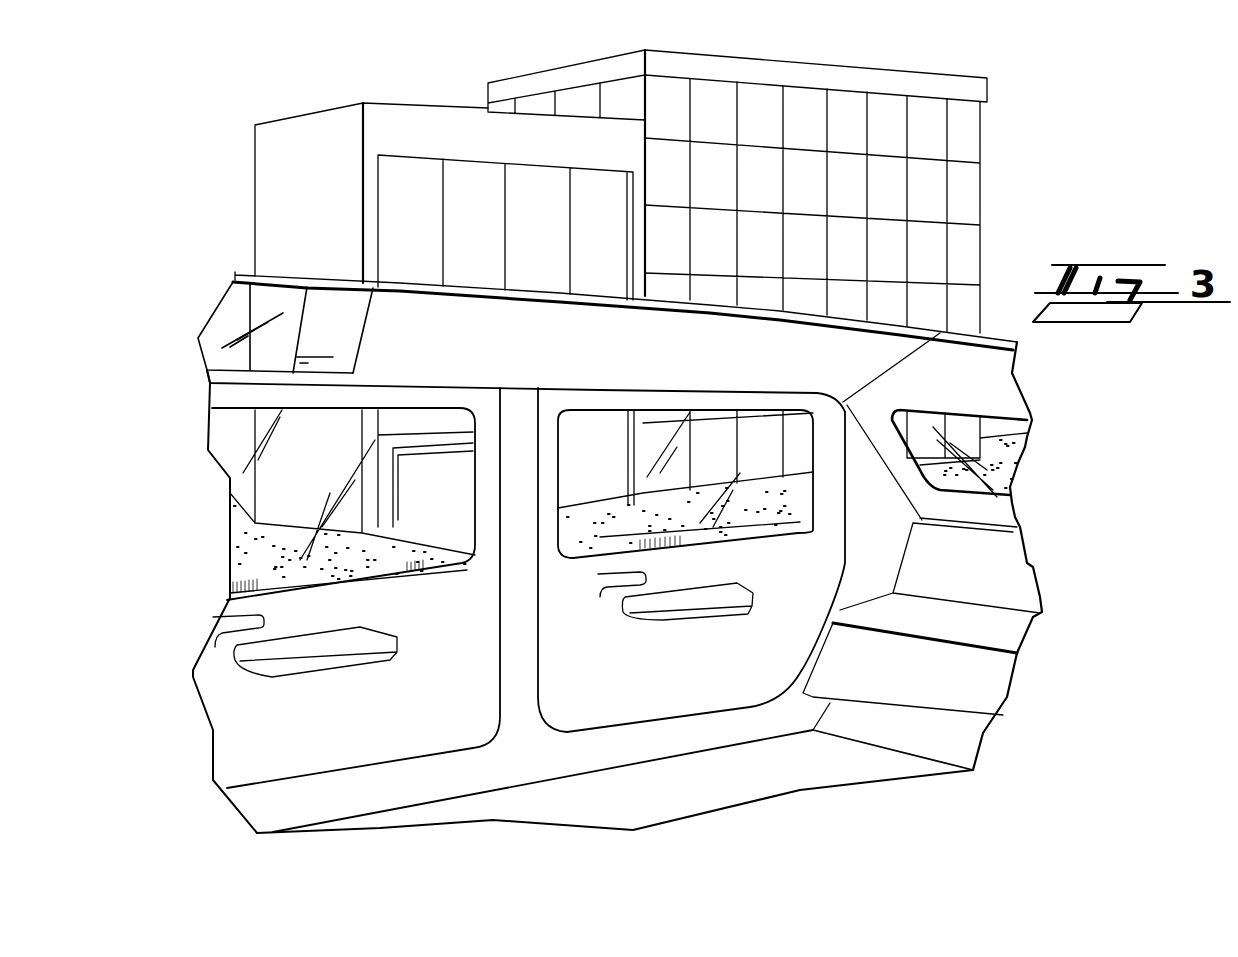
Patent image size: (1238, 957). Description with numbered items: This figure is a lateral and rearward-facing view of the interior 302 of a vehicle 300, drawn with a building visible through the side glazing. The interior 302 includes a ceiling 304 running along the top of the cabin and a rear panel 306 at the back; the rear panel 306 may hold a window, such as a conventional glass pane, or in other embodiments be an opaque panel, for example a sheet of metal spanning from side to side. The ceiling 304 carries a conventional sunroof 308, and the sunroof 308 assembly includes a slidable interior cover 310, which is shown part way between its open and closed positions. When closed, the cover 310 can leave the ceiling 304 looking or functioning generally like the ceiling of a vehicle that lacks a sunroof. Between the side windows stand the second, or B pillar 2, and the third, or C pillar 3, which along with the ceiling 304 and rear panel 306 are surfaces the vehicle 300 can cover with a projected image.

The vehicle 300 is at (640, 809).
The interior 302 is at (272, 730).
The ceiling 304 is at (548, 363).
The rear panel 306 is at (1030, 475).
The sunroof 308 is at (220, 305).
The slidable interior cover 310 is at (308, 343).
The B pillar 2 is at (493, 621).
The C pillar 3 is at (855, 524).